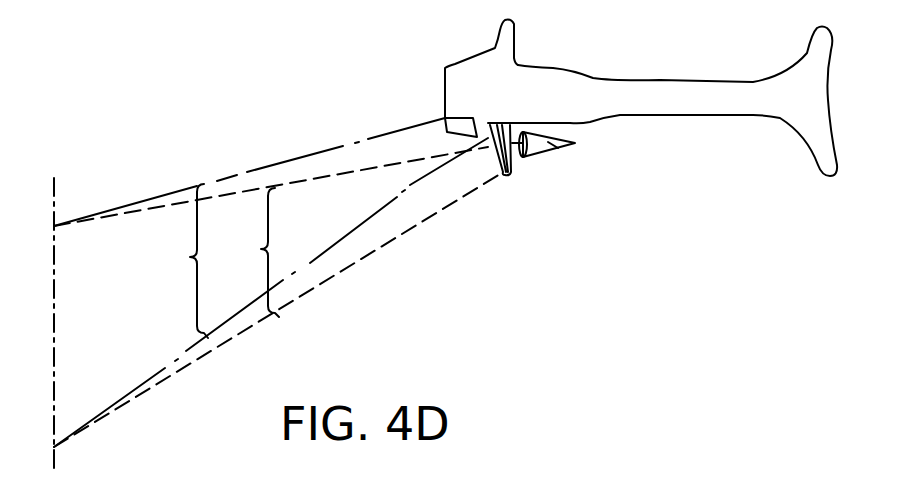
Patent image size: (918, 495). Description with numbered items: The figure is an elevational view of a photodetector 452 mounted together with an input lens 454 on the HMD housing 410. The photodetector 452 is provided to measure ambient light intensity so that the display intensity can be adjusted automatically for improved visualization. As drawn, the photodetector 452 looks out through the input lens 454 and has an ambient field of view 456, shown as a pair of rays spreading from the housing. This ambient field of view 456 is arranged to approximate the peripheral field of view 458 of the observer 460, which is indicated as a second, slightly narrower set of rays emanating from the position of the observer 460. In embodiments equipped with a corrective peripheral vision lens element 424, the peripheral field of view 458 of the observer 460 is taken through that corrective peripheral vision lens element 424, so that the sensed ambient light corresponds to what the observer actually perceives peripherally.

The HMD housing 410 is at (600, 84).
The photodetector 452 is at (467, 118).
The input lens 454 is at (442, 117).
The corrective peripheral vision lens element 424 is at (510, 173).
The observer 460 is at (575, 143).
The ambient field of view 456 is at (172, 261).
The peripheral field of view 458 is at (243, 252).